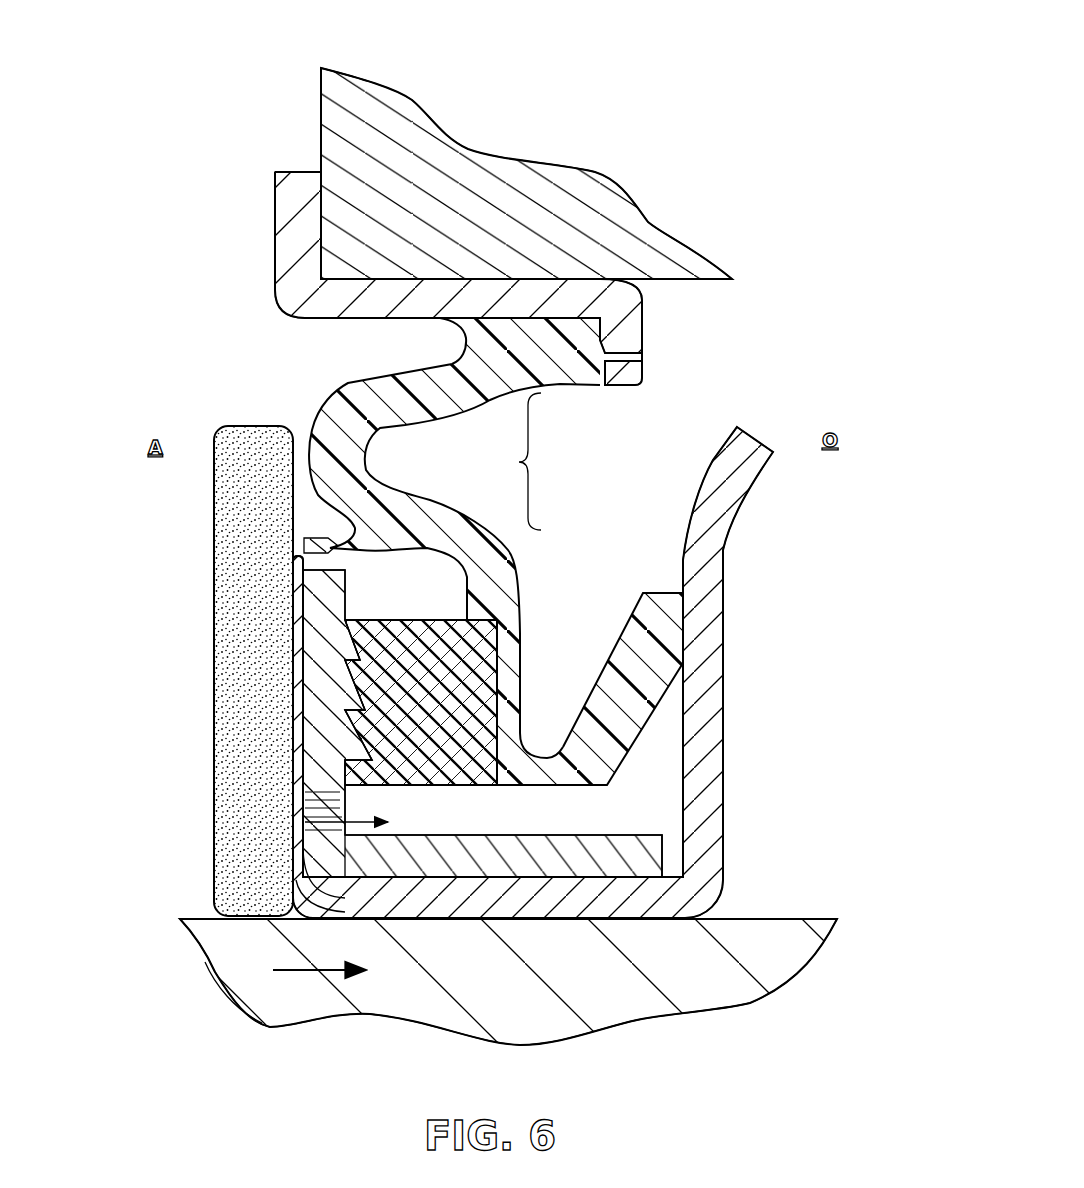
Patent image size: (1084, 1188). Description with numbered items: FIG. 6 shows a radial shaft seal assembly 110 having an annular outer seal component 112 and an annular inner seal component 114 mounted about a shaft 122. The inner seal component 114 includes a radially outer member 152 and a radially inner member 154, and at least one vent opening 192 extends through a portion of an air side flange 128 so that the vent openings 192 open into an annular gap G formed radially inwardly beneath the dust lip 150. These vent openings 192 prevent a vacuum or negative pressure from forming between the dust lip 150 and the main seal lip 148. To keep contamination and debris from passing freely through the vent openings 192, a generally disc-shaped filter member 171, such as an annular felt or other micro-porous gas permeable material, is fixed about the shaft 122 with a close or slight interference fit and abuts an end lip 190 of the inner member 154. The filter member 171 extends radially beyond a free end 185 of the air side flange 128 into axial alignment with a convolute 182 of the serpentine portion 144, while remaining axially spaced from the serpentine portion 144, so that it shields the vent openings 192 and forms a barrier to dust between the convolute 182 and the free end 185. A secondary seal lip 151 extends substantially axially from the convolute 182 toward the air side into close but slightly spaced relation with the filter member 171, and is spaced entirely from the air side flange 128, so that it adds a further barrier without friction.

The seal assembly 110 is at (717, 135).
The outer seal component 112 is at (778, 317).
The convolute 182 is at (325, 430).
The serpentine portion 144 is at (556, 461).
The main seal lip 148 is at (648, 606).
The secondary seal lip 151 is at (330, 535).
The free end 185 is at (318, 548).
The air side flange 128 is at (320, 646).
The filter member 171 is at (236, 704).
The vent opening 192 is at (315, 793).
The annular gap G is at (303, 822).
The end lip 190 is at (320, 866).
The dust lip 150 is at (405, 784).
The radially outer member 152 is at (549, 834).
The radially inner member 154 is at (530, 923).
The inner seal component 114 is at (808, 880).
The shaft 122 is at (775, 949).